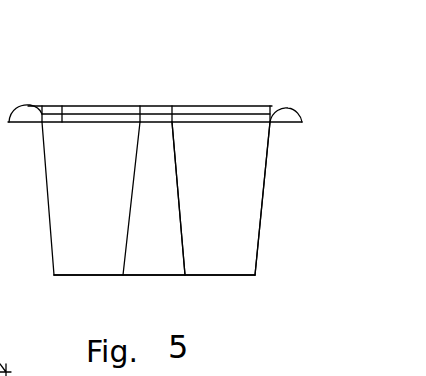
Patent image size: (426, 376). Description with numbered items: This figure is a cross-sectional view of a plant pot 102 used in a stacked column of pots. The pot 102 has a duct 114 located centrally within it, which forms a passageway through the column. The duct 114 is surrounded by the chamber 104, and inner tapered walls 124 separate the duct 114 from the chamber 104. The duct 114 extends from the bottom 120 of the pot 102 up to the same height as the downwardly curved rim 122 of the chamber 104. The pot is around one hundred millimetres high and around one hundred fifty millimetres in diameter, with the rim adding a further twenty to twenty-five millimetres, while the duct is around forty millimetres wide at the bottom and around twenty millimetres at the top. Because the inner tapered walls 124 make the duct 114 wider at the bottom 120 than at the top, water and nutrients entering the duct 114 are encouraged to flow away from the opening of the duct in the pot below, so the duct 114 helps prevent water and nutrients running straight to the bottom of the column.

The plant pot 102 is at (300, 113).
The chamber 104 is at (233, 146).
The duct 114 is at (157, 146).
The bottom 120 is at (214, 273).
The downwardly curved rim 122 is at (270, 123).
The inner tapered walls 124 is at (180, 212).